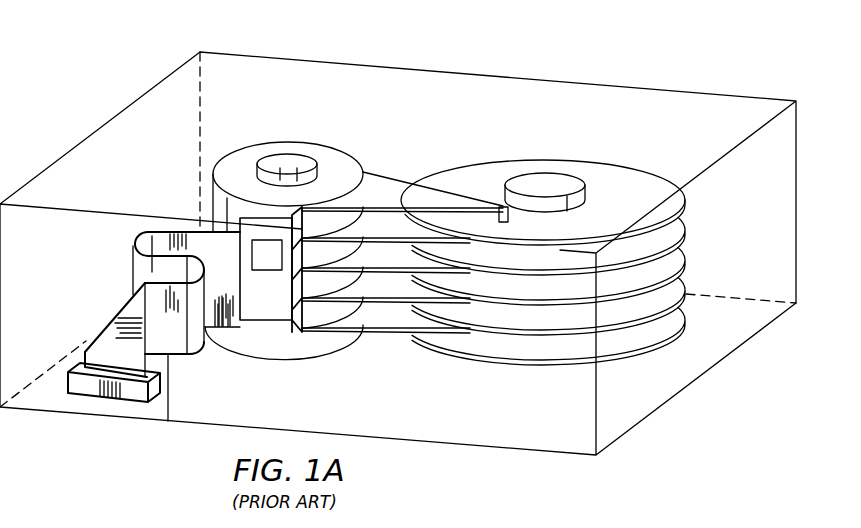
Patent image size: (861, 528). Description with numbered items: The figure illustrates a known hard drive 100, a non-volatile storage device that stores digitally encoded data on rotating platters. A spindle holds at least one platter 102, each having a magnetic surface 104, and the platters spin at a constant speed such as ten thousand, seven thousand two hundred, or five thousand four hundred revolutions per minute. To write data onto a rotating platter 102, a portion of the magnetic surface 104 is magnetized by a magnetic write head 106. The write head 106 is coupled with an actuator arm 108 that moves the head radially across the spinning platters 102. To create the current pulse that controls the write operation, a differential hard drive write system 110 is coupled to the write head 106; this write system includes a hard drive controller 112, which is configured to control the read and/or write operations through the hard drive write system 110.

The hard drive 100 is at (78, 66).
The platter 102 is at (621, 168).
The magnetic surface 104 is at (674, 206).
The magnetic write head 106 is at (503, 206).
The actuator arm 108 is at (377, 182).
The differential hard drive write system 110 is at (263, 245).
The hard drive controller 112 is at (258, 308).